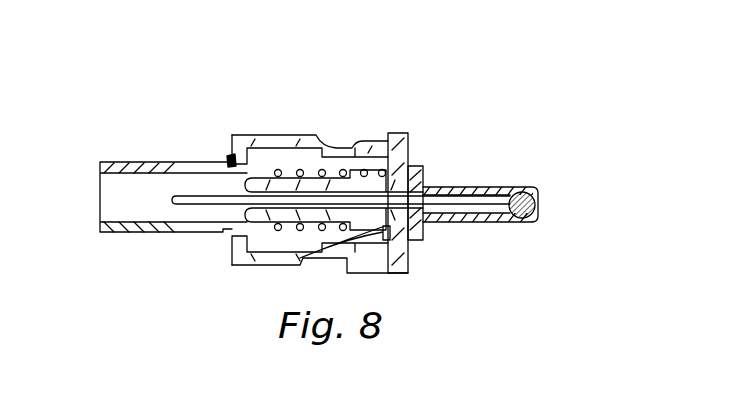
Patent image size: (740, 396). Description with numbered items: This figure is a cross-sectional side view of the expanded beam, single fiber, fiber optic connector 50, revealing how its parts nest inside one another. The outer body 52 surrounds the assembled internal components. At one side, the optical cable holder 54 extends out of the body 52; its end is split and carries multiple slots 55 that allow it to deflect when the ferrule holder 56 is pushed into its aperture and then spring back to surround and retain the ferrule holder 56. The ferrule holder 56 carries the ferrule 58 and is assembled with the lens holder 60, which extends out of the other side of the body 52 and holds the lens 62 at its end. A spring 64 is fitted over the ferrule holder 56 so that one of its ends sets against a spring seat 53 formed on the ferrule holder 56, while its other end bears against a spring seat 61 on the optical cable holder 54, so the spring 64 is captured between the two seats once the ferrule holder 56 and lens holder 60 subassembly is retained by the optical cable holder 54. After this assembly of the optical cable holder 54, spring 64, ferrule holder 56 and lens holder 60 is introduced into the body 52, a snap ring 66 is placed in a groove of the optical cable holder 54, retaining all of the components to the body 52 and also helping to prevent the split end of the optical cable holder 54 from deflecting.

The expanded beam, single fiber, fiber optic connector 50 is at (551, 117).
The body 52 is at (312, 165).
The spring seat 53 is at (388, 140).
The optical cable holder 54 is at (170, 163).
The slots 55 is at (193, 203).
The ferrule holder 56 is at (423, 178).
The ferrule 58 is at (415, 232).
The lens holder 60 is at (485, 187).
The spring seat 61 is at (330, 170).
The lens 62 is at (538, 216).
The spring 64 is at (345, 169).
The snap ring 66 is at (229, 160).